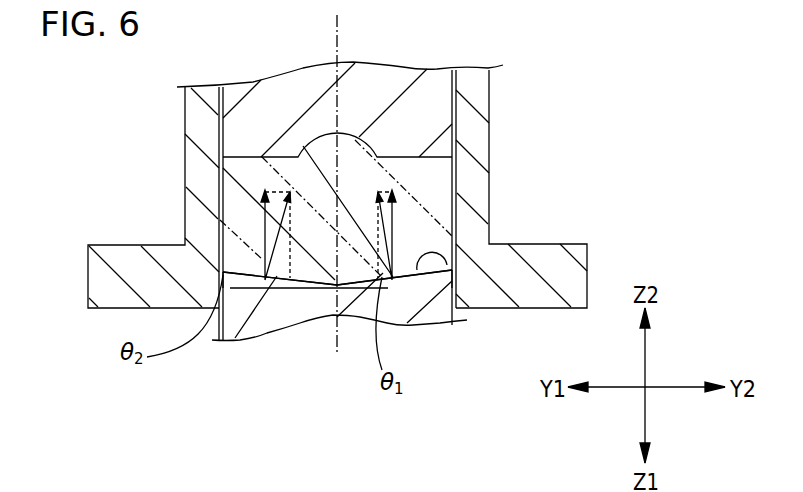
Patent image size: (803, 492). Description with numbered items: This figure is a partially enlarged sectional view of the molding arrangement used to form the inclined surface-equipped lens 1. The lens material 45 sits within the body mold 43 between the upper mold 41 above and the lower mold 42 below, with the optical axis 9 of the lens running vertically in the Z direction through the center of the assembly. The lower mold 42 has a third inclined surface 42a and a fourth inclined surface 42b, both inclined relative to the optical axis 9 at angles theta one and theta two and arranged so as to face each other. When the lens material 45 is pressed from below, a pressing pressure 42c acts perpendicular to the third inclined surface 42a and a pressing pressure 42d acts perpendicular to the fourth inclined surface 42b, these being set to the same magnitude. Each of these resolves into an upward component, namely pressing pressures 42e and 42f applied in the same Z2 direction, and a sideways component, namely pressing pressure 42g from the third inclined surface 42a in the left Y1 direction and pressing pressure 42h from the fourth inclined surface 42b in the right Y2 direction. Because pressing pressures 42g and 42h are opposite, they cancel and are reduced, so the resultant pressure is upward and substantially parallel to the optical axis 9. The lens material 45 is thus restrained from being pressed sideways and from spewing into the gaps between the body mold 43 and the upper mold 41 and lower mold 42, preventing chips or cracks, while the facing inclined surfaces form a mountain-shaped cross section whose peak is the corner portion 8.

The inclined surface-equipped lens 1 is at (400, 170).
The corner portion 8 is at (297, 327).
The optical axis 9 is at (337, 42).
The upper mold 41 is at (388, 72).
The lower mold 42 is at (363, 305).
The third inclined surface 42a is at (455, 258).
The fourth inclined surface 42b is at (255, 250).
The pressing pressure 42c is at (385, 210).
The pressing pressure 42d is at (265, 228).
The pressing pressure 42e is at (390, 225).
The pressing pressure 42f is at (290, 236).
The pressing pressure 42g is at (409, 300).
The pressing pressure 42h is at (268, 290).
The body mold 43 is at (203, 107).
The lens material 45 is at (452, 136).